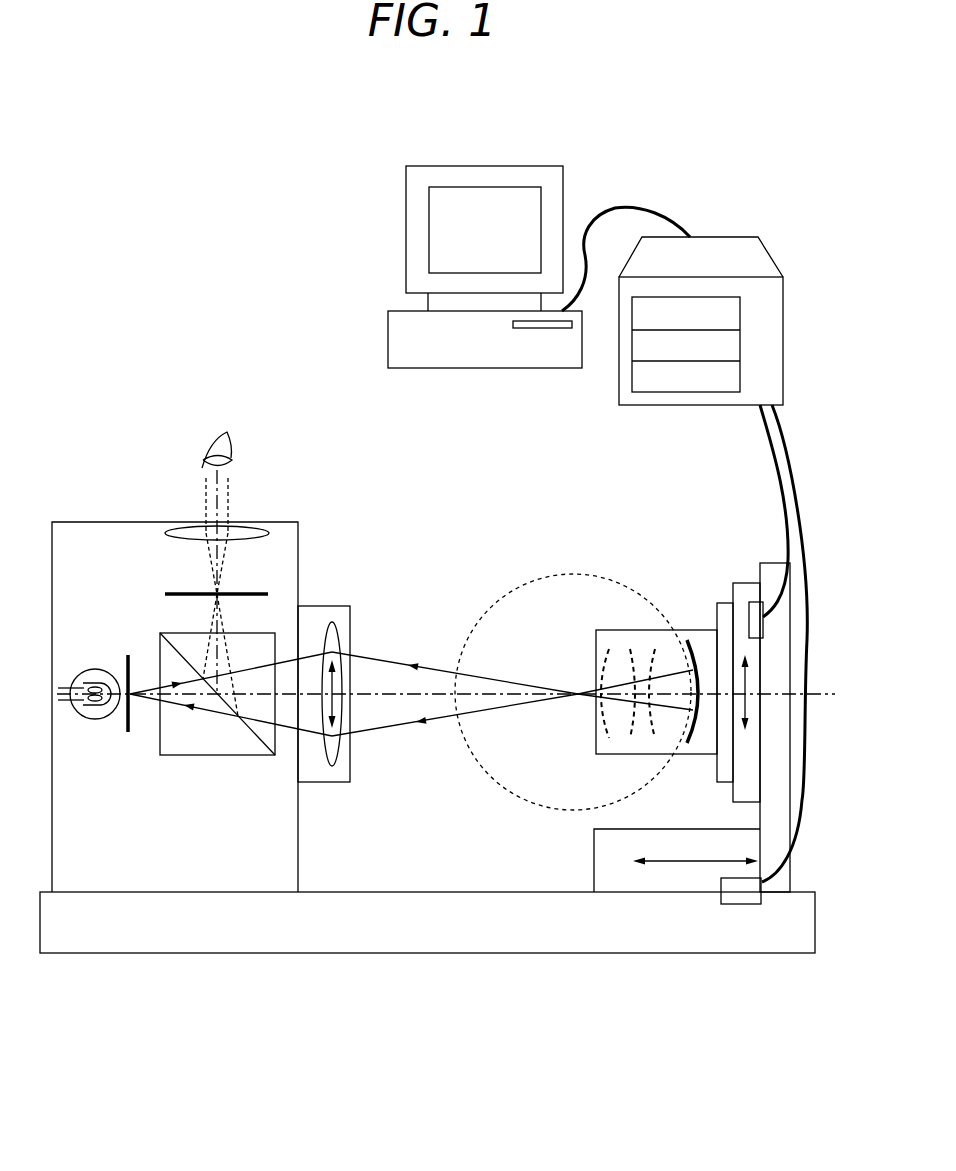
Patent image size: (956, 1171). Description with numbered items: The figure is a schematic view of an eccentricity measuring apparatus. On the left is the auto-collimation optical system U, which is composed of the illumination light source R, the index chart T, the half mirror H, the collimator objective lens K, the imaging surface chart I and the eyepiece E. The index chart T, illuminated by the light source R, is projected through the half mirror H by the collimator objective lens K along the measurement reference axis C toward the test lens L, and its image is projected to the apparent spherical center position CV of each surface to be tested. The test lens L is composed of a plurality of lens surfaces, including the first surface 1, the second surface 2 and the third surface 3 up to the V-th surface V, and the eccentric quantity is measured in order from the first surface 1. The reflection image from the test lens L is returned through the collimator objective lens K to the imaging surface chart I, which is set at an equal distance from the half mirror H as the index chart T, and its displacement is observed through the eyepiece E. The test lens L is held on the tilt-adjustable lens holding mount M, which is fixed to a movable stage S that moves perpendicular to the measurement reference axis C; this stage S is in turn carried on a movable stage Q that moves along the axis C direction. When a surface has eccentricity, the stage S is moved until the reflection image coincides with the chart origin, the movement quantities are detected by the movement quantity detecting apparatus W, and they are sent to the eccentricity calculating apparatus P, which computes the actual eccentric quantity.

The eccentricity calculating apparatus P is at (515, 165).
The movement quantity detecting apparatus W is at (745, 237).
The auto-collimation optical system U is at (283, 522).
The eyepiece E is at (178, 540).
The imaging surface chart I is at (175, 594).
The half mirror H is at (250, 738).
The illumination light source R is at (95, 720).
The index chart T is at (128, 737).
The measurement reference axis C is at (285, 700).
The collimator objective lens K is at (335, 606).
The apparent spherical center position CV is at (578, 690).
The test lens L is at (640, 630).
The first surface 1 is at (604, 737).
The second surface 2 is at (632, 740).
The third surface 3 is at (650, 740).
The V-th surface V is at (692, 640).
The lens holding mount M is at (723, 603).
The movable stage S is at (748, 583).
The movable stage Q is at (594, 852).